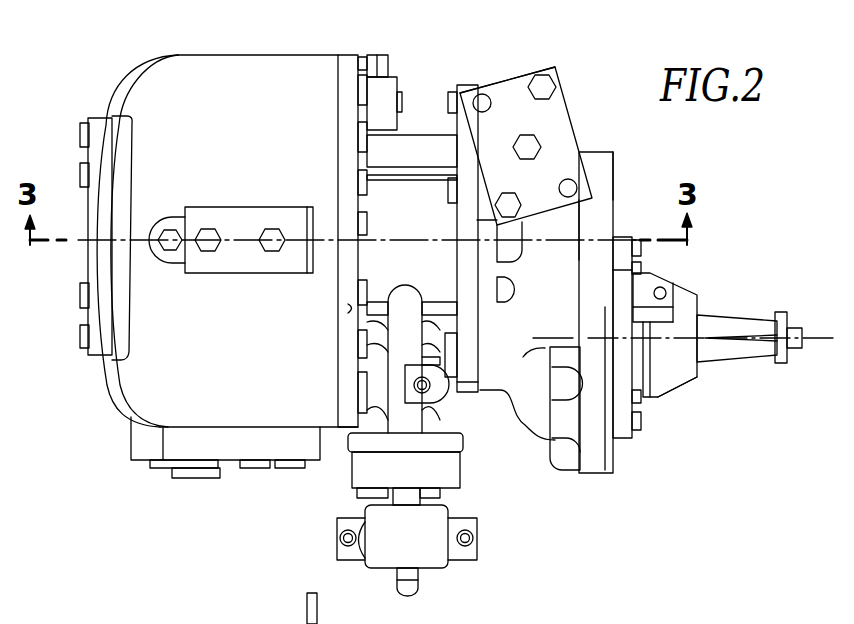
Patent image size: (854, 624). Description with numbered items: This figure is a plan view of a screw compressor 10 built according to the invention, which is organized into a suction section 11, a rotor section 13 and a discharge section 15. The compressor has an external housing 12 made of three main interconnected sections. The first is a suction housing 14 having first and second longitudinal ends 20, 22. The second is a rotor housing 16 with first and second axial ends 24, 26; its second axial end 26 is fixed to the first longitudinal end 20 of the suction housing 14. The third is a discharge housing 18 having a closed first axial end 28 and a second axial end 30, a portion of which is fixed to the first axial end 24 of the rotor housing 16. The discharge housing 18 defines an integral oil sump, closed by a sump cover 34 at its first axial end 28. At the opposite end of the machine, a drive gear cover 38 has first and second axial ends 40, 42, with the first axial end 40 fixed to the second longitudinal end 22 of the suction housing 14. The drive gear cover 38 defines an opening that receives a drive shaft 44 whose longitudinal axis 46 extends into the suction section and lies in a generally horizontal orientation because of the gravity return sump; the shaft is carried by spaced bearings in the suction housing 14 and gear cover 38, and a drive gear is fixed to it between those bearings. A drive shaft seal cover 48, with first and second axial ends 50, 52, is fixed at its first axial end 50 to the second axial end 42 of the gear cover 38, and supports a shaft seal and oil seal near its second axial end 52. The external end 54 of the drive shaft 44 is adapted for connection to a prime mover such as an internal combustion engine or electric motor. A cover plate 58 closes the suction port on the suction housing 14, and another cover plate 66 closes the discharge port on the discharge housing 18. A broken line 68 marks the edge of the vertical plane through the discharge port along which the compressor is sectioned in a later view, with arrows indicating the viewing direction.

The screw compressor 10 is at (422, 34).
The suction section 11 is at (547, 52).
The external housing 12 is at (343, 50).
The rotor section 13 is at (445, 77).
The suction housing 14 is at (538, 440).
The discharge section 15 is at (255, 50).
The rotor housing 16 is at (420, 145).
The discharge housing 18 is at (180, 70).
The first longitudinal end of suction housing 20 is at (470, 330).
The second longitudinal end of suction housing 22 is at (590, 298).
The first axial end of rotor housing 24 is at (338, 131).
The second axial end of rotor housing 26 is at (489, 372).
The closed first axial end of discharge housing 28 is at (82, 252).
The second axial end of discharge housing 30 is at (345, 309).
The sump cover 34 is at (100, 117).
The drive gear cover 38 is at (590, 150).
The first axial end of drive gear cover 40 is at (590, 218).
The second axial end of drive gear cover 42 is at (615, 163).
The drive shaft 44 is at (740, 350).
The longitudinal axis of drive shaft 46 is at (818, 342).
The drive shaft seal cover 48 is at (685, 292).
The first axial end of drive shaft seal cover 50 is at (613, 280).
The second axial end of drive shaft seal cover 52 is at (700, 378).
The external end of drive shaft 54 is at (800, 325).
The cover plate 58 is at (510, 90).
The cover plate 66 is at (228, 212).
The broken line 68 is at (415, 238).